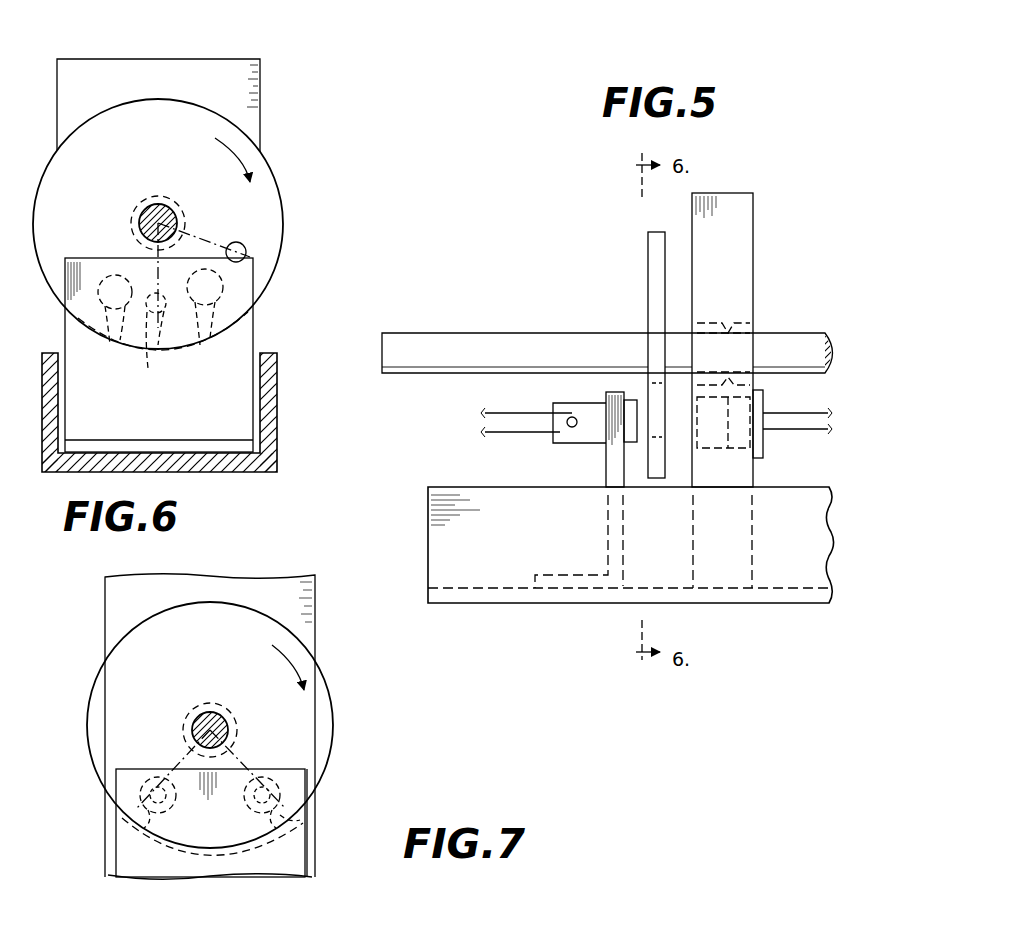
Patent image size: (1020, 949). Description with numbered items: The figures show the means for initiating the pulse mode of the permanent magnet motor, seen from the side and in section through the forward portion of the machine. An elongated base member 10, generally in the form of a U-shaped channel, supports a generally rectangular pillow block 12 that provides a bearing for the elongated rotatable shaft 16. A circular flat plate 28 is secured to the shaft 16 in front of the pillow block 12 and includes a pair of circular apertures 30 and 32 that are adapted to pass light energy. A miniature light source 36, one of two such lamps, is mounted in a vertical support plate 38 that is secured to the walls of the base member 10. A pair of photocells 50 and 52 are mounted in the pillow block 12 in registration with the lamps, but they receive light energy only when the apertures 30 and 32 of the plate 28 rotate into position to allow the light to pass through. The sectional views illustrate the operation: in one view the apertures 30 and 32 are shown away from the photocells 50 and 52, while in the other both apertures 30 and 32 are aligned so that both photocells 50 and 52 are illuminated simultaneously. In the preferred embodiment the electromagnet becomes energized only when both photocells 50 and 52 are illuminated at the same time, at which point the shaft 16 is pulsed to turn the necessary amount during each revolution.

In FIG. 6, the base member 10 is at (278, 385).
In FIG. 5, the base member 10 is at (428, 514).
In FIG. 6, the pillow block 12 is at (226, 59).
In FIG. 5, the pillow block 12 is at (745, 220).
In FIG. 6, the rotatable shaft 16 is at (146, 204).
In FIG. 5, the rotatable shaft 16 is at (511, 342).
In FIG. 7, the rotatable shaft 16 is at (213, 706).
In FIG. 6, the circular flat plate 28 is at (267, 163).
In FIG. 5, the circular flat plate 28 is at (657, 257).
In FIG. 7, the circular flat plate 28 is at (326, 685).
In FIG. 6, the circular aperture 30 is at (232, 241).
In FIG. 5, the circular aperture 30 is at (663, 383).
In FIG. 7, the circular aperture 30 is at (162, 773).
In FIG. 6, the circular aperture 32 is at (144, 355).
In FIG. 5, the circular aperture 32 is at (660, 437).
In FIG. 7, the circular aperture 32 is at (258, 773).
In FIG. 5, the miniature light source 36 is at (575, 405).
In FIG. 5, the vertical support plate 38 is at (612, 475).
In FIG. 6, the photocell 50 is at (117, 347).
In FIG. 7, the photocell 50 is at (118, 831).
In FIG. 6, the photocell 52 is at (208, 344).
In FIG. 5, the photocell 52 is at (757, 465).
In FIG. 7, the photocell 52 is at (306, 831).